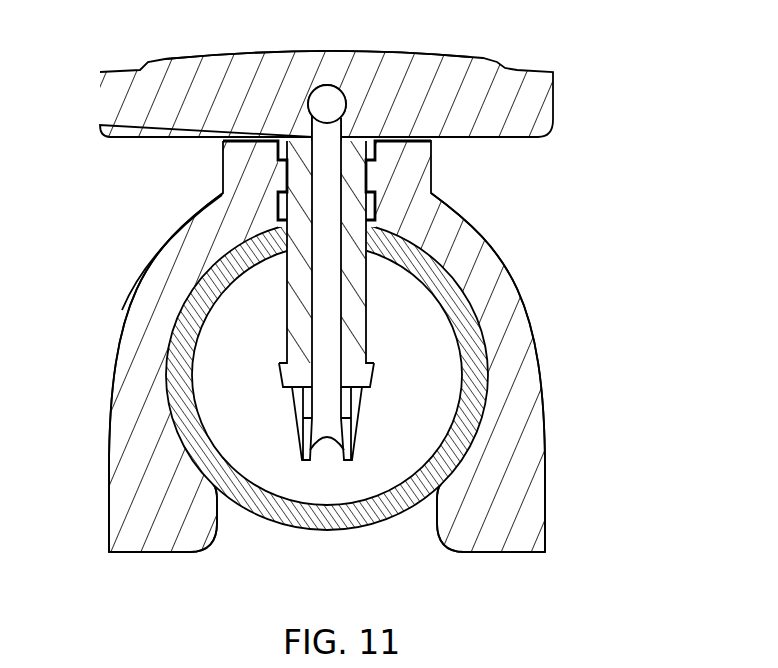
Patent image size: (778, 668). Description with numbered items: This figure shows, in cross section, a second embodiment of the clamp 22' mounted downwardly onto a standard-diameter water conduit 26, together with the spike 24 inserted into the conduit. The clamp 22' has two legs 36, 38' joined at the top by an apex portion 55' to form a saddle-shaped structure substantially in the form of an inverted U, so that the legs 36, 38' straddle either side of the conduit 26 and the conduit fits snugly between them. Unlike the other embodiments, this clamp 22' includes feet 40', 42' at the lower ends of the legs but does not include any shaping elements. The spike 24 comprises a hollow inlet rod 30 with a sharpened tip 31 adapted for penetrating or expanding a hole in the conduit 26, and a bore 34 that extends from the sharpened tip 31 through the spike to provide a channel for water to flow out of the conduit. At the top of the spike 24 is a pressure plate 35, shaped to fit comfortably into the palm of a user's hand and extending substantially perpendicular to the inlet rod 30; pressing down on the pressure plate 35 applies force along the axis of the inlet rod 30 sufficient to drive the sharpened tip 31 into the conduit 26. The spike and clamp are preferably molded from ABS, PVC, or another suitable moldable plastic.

The spike 24 is at (487, 55).
The pressure plate 35 is at (248, 76).
The bore 34 is at (327, 98).
The apex portion 55' is at (171, 248).
The hollow inlet rod 30 is at (348, 308).
The clamp 22' is at (353, 345).
The leg 38' is at (130, 372).
The leg 36 is at (537, 455).
The foot 42' is at (163, 542).
The conduit 26 is at (343, 520).
The foot 40' is at (491, 547).
The sharpened tip 31 is at (350, 447).